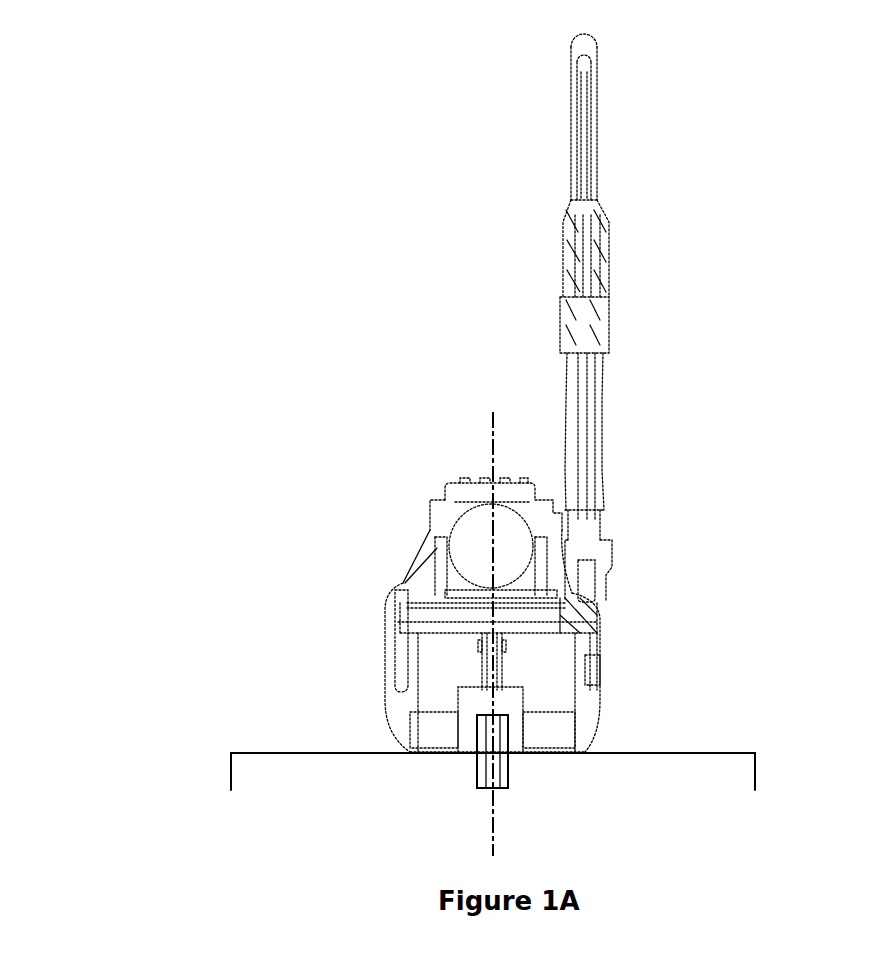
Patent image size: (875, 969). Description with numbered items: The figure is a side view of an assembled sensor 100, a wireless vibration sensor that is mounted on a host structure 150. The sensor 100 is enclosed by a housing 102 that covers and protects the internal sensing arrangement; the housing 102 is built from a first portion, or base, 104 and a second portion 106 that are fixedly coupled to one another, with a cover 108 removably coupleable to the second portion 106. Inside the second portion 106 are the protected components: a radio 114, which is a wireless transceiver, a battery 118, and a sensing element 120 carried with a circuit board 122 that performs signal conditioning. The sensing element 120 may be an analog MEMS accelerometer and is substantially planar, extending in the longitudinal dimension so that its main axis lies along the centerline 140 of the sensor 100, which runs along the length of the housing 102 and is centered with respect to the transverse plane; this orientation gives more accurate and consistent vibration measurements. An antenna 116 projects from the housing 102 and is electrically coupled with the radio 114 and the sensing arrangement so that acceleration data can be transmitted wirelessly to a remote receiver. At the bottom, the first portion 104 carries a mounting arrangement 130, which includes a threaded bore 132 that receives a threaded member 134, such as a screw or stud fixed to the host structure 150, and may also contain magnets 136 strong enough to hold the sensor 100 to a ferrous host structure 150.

The sensor 100 is at (326, 228).
The housing 102 is at (622, 642).
The first portion 104 is at (550, 725).
The second portion 106 is at (600, 630).
The cover 108 is at (527, 482).
The radio 114 is at (447, 612).
The antenna 116 is at (597, 175).
The battery 118 is at (476, 545).
The sensing element 120 is at (484, 660).
The circuit board 122 is at (432, 620).
The mounting arrangement 130 is at (524, 779).
The threaded bore 132 is at (510, 740).
The threaded member 134 is at (484, 738).
The magnets 136 is at (512, 745).
The centerline 140 is at (487, 435).
The host structure 150 is at (277, 773).